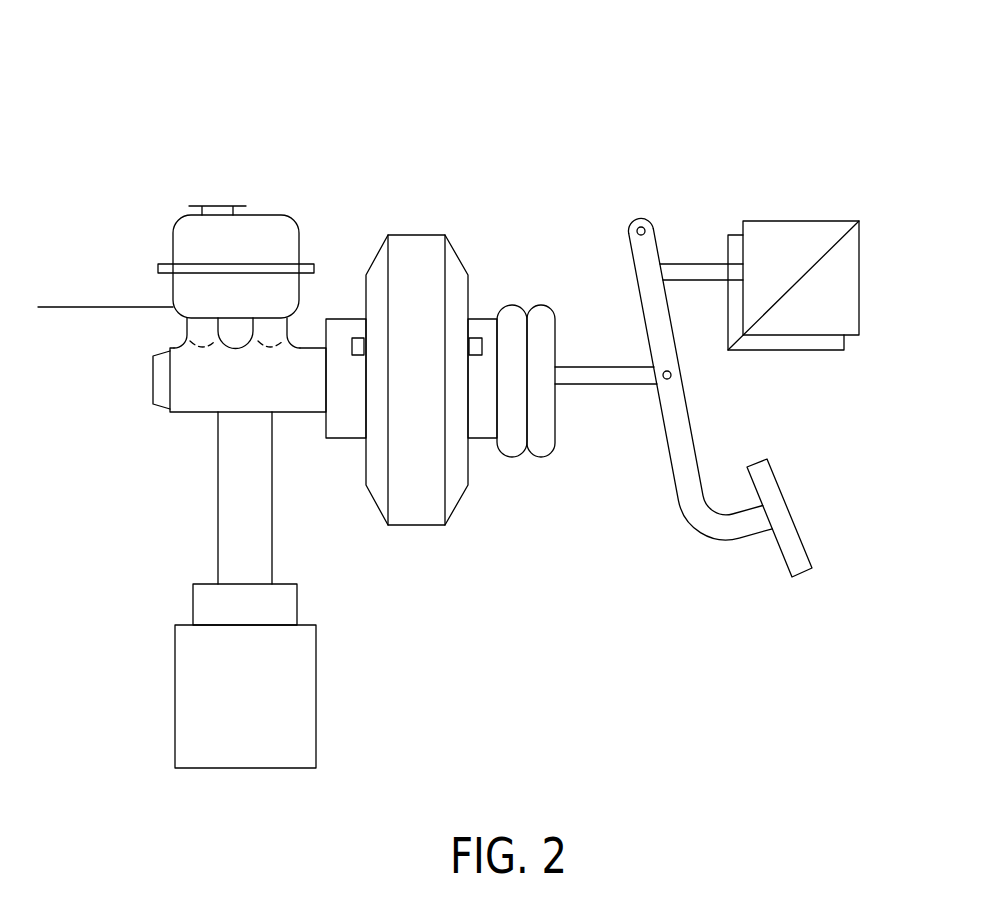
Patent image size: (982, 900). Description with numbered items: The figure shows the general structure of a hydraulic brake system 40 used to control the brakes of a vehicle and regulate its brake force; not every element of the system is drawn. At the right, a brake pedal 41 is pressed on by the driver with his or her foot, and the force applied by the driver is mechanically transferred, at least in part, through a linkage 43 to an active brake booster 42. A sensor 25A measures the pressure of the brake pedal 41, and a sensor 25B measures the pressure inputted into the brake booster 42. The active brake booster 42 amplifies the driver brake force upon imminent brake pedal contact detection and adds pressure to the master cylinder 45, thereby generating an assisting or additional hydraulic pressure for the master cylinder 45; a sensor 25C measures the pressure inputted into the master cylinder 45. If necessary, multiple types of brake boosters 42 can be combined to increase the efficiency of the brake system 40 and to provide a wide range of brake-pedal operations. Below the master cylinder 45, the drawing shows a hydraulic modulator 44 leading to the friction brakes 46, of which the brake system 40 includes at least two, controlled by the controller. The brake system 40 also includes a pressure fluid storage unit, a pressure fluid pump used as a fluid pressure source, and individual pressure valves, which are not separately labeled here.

The brake system 40 is at (458, 81).
The brake pedal 41 is at (790, 511).
The active brake booster 42 is at (417, 234).
The linkage 43 is at (610, 387).
The hydraulic modulator 44 is at (297, 607).
The master cylinder 45 is at (193, 413).
The friction brakes 46 is at (316, 698).
The sensor 25A is at (802, 220).
The sensor 25B is at (473, 338).
The sensor 25C is at (360, 338).